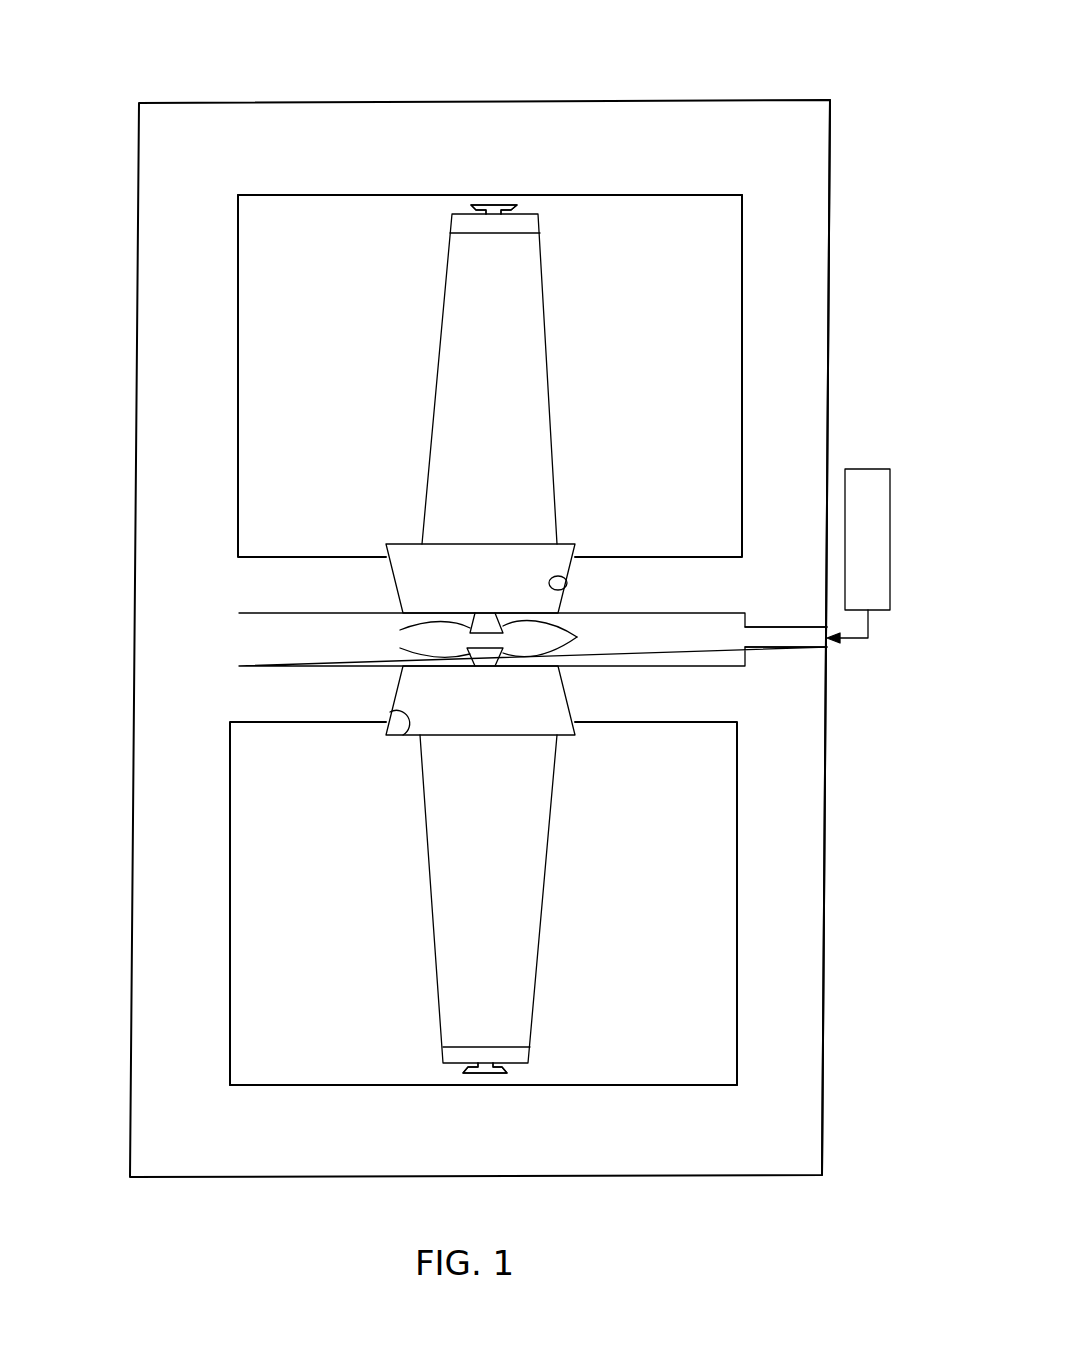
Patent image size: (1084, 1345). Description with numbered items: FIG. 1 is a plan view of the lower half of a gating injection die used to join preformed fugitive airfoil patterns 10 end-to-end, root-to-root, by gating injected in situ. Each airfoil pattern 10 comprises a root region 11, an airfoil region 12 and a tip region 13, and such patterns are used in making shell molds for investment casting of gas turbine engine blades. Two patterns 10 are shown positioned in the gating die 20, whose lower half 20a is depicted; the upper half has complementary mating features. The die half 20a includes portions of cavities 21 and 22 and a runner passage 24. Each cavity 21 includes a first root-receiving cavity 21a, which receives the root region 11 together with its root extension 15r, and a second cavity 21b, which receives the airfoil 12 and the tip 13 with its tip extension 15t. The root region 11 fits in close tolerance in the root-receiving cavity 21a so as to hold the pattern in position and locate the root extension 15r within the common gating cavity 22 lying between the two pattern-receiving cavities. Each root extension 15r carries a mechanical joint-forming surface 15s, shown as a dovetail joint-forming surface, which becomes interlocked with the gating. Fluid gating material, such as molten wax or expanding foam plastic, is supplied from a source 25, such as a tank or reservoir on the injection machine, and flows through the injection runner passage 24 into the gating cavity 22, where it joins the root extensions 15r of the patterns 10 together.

The airfoil pattern 10 is at (540, 326).
The root region 11 is at (558, 556).
The airfoil region 12 is at (537, 401).
The tip region 13 is at (520, 258).
The tip extension 15t is at (497, 210).
The mechanical joint-forming surface 15s is at (405, 640).
The root extension 15r is at (561, 639).
The gating die 20 is at (697, 97).
The lower half of the gating die 20a is at (790, 130).
The cavity 21 is at (686, 238).
The first root-receiving cavity 21a is at (568, 593).
The second cavity 21b is at (365, 242).
The gating cavity 22 is at (533, 639).
The injection runner passage 24 is at (778, 647).
The source 25 is at (862, 485).